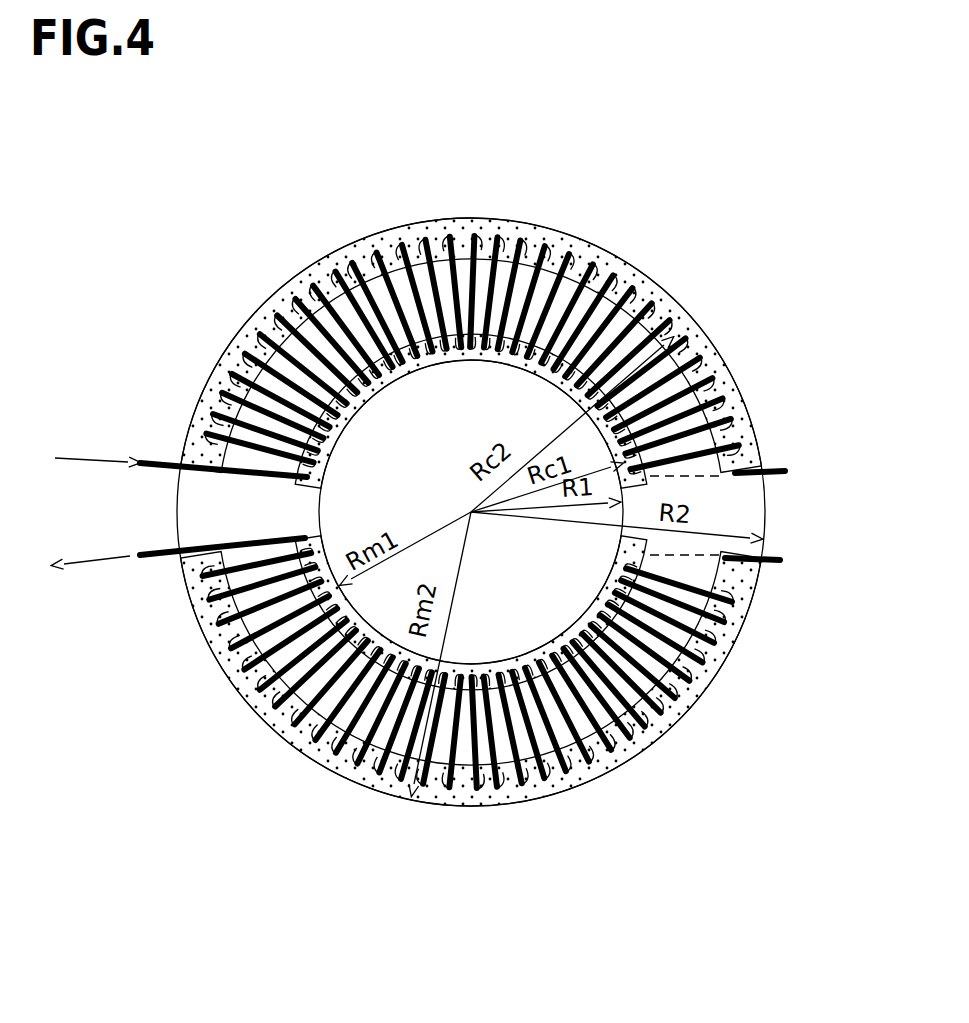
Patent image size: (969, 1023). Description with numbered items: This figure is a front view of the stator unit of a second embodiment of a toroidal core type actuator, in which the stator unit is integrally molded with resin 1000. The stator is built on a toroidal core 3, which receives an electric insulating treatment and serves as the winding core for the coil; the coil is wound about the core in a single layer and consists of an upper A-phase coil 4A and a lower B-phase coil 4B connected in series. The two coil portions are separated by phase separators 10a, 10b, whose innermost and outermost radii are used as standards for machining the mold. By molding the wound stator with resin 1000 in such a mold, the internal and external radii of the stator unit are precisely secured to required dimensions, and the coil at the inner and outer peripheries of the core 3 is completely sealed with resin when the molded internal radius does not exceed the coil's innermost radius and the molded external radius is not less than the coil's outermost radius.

The resin 1000 is at (463, 502).
The core 3 is at (740, 636).
The upper coil (A-phase coil) 4A is at (352, 268).
The lower coil (B-phase coil) 4B is at (527, 733).
The phase separator 10a is at (747, 517).
The phase separator 10b is at (210, 512).